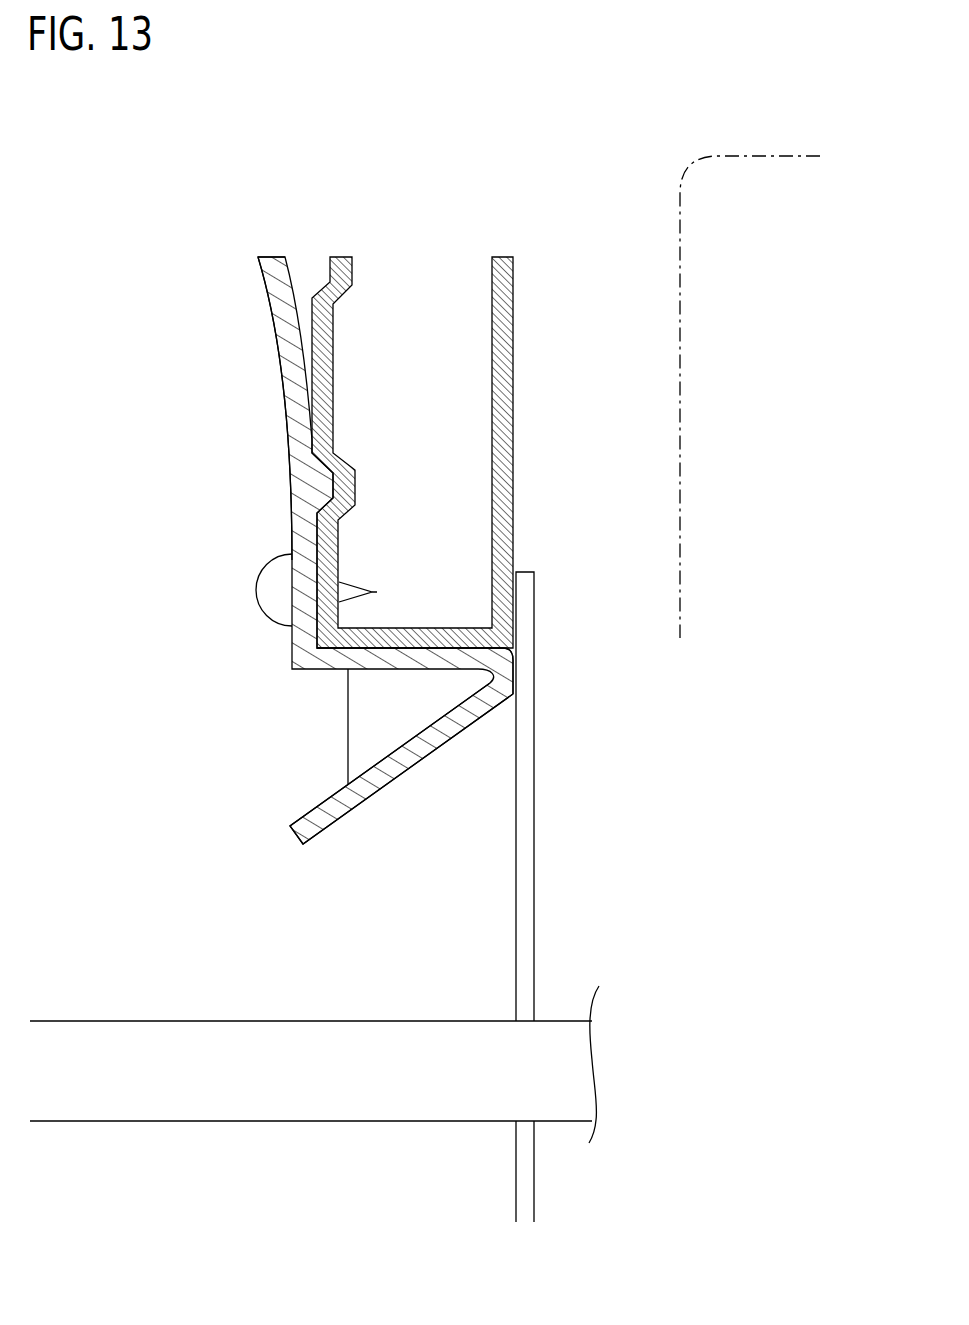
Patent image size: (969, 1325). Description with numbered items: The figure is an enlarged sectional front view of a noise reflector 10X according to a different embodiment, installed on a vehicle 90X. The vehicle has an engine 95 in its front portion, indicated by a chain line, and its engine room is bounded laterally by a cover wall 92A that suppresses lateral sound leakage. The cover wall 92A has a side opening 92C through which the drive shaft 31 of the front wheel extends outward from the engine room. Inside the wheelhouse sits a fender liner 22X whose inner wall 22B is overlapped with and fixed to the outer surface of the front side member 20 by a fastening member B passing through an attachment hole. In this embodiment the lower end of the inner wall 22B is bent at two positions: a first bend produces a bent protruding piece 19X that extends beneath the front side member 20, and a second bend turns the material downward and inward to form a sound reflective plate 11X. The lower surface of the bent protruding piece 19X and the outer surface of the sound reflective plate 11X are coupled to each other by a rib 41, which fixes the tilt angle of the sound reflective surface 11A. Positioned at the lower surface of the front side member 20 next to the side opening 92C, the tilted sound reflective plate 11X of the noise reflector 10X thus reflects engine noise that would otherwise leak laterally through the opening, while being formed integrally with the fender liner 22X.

The vehicle 90X is at (171, 180).
The inner wall 22B is at (285, 293).
The fender liner 22X is at (257, 400).
The front side member 20 is at (505, 342).
The fastening member B is at (258, 588).
The cover wall 92A is at (546, 593).
The bent protruding piece 19X is at (490, 645).
The rib 41 is at (445, 688).
The noise reflector 10X is at (620, 617).
The sound reflective plate 11X is at (460, 726).
The sound reflective surface 11A is at (428, 766).
The side opening 92C is at (523, 913).
The engine 95 is at (749, 145).
The drive shaft 31 is at (253, 1090).